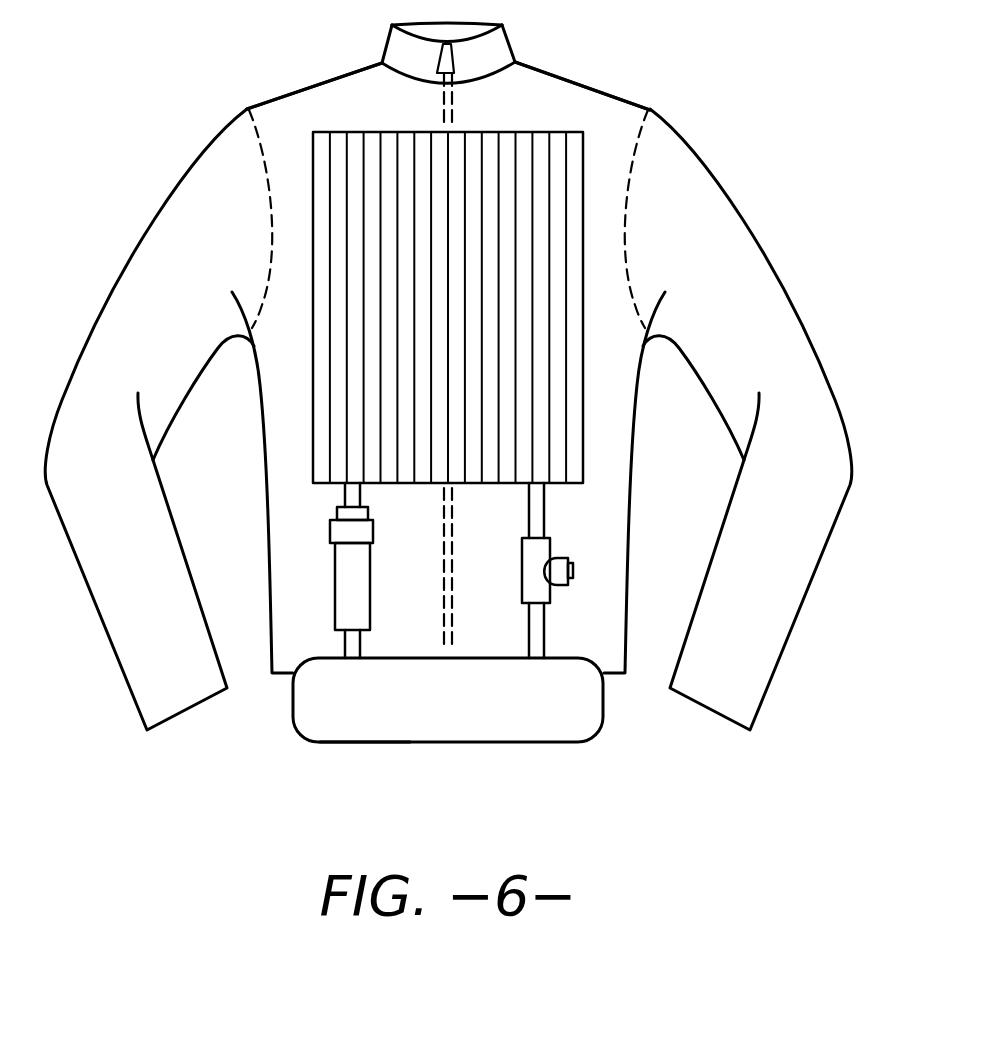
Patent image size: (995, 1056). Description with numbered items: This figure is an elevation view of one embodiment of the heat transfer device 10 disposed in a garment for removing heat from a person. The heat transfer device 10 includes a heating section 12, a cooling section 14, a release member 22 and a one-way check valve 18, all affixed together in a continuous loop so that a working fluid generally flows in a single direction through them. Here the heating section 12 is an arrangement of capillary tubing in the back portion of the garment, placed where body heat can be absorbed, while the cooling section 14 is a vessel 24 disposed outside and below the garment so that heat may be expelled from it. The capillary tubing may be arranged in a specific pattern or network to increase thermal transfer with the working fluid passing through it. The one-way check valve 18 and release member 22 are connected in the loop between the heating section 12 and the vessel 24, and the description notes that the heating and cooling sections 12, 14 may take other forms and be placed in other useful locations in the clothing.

The heat transfer device 10 is at (776, 140).
The heating section 12 is at (587, 147).
The cooling section 14 is at (502, 725).
The one-way check valve 18 is at (347, 567).
The release member 22 is at (550, 548).
The vessel 24 is at (373, 725).